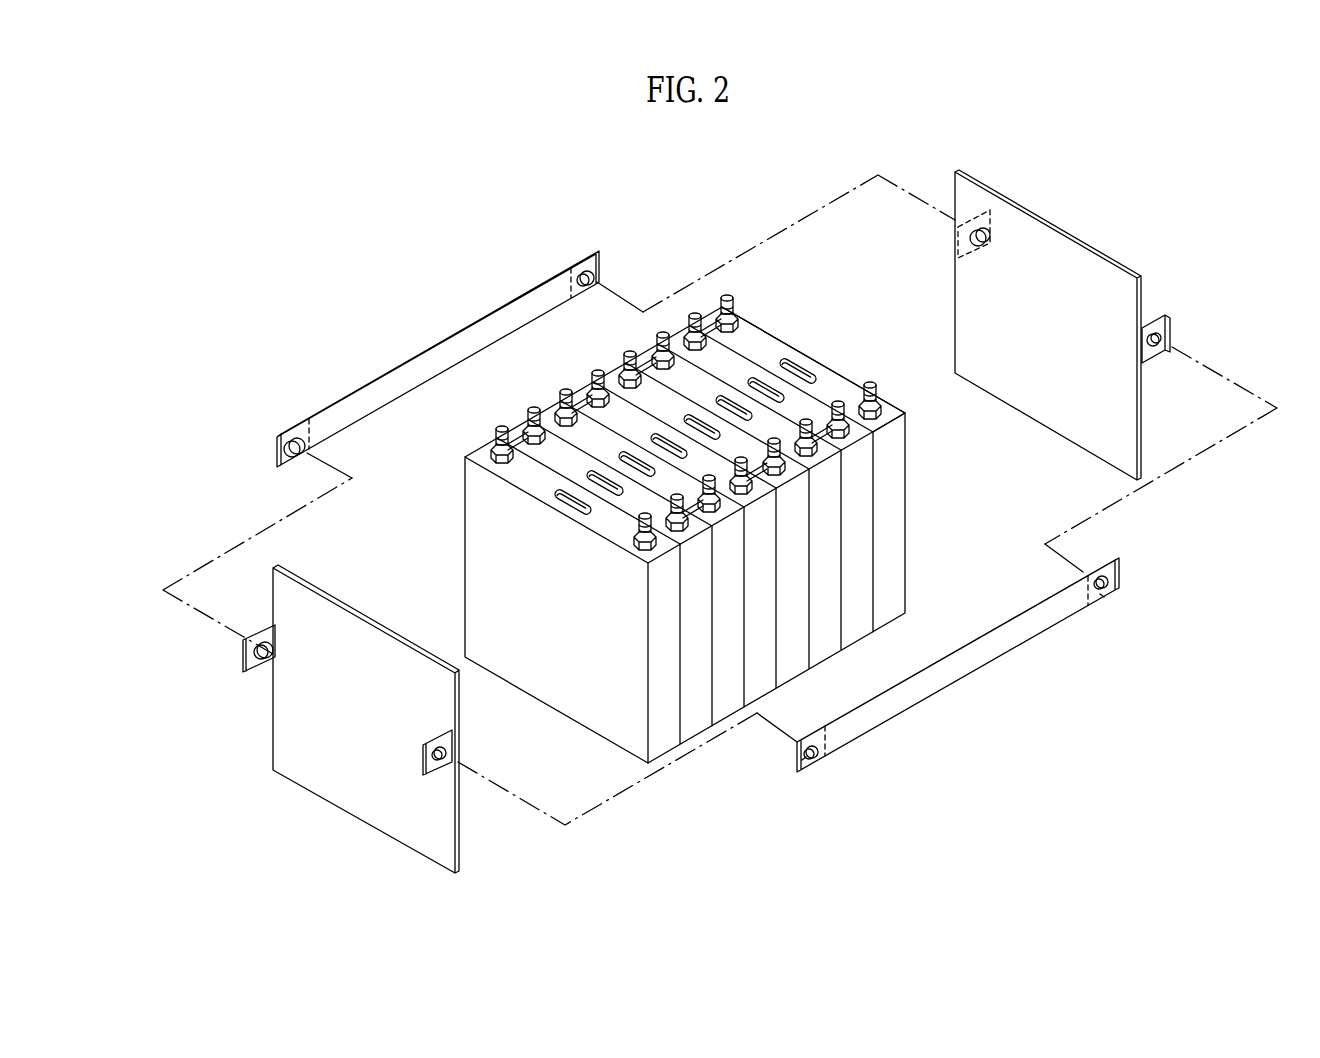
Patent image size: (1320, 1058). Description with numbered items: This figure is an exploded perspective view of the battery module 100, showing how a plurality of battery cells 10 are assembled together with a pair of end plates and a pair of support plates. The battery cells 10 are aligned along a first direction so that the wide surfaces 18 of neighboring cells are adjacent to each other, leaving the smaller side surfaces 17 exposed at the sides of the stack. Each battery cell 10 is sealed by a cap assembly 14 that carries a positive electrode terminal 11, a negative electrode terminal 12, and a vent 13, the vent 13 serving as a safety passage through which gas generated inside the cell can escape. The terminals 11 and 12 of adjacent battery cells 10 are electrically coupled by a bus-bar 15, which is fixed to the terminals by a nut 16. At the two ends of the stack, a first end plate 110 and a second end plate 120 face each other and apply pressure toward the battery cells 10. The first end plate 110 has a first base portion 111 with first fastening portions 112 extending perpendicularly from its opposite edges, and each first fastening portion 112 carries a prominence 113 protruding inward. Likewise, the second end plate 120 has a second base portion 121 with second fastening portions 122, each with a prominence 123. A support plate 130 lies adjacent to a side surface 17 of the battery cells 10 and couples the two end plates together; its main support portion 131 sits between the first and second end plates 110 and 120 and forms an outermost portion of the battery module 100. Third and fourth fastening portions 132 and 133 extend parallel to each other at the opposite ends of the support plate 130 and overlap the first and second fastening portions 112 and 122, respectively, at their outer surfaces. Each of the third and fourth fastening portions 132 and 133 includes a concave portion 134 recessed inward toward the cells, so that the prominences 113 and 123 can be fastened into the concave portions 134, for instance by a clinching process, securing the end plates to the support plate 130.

The battery module 100 is at (1165, 154).
The battery cell 10 is at (856, 620).
The positive electrode terminal 11 is at (728, 310).
The negative electrode terminal 12 is at (872, 382).
The vent 13 is at (795, 365).
The cap assembly 14 is at (840, 387).
The bus-bar 15 is at (513, 437).
The nut 16 is at (563, 405).
The side surface 17 is at (893, 523).
The wide surface 18 is at (478, 546).
The first end plate 110 is at (186, 716).
The first base portion 111 is at (283, 750).
The first fastening portion 112 is at (256, 672).
The prominence 113 is at (254, 644).
The second end plate 120 is at (1185, 215).
The second base portion 121 is at (1057, 253).
The second fastening portion 122 is at (992, 226).
The prominence 123 is at (986, 246).
The support plate 130 is at (260, 328).
The main support portion 131 is at (439, 356).
The third fastening portion 132 is at (292, 436).
The fourth fastening portion 133 is at (575, 267).
The concave portion 134 is at (800, 757).